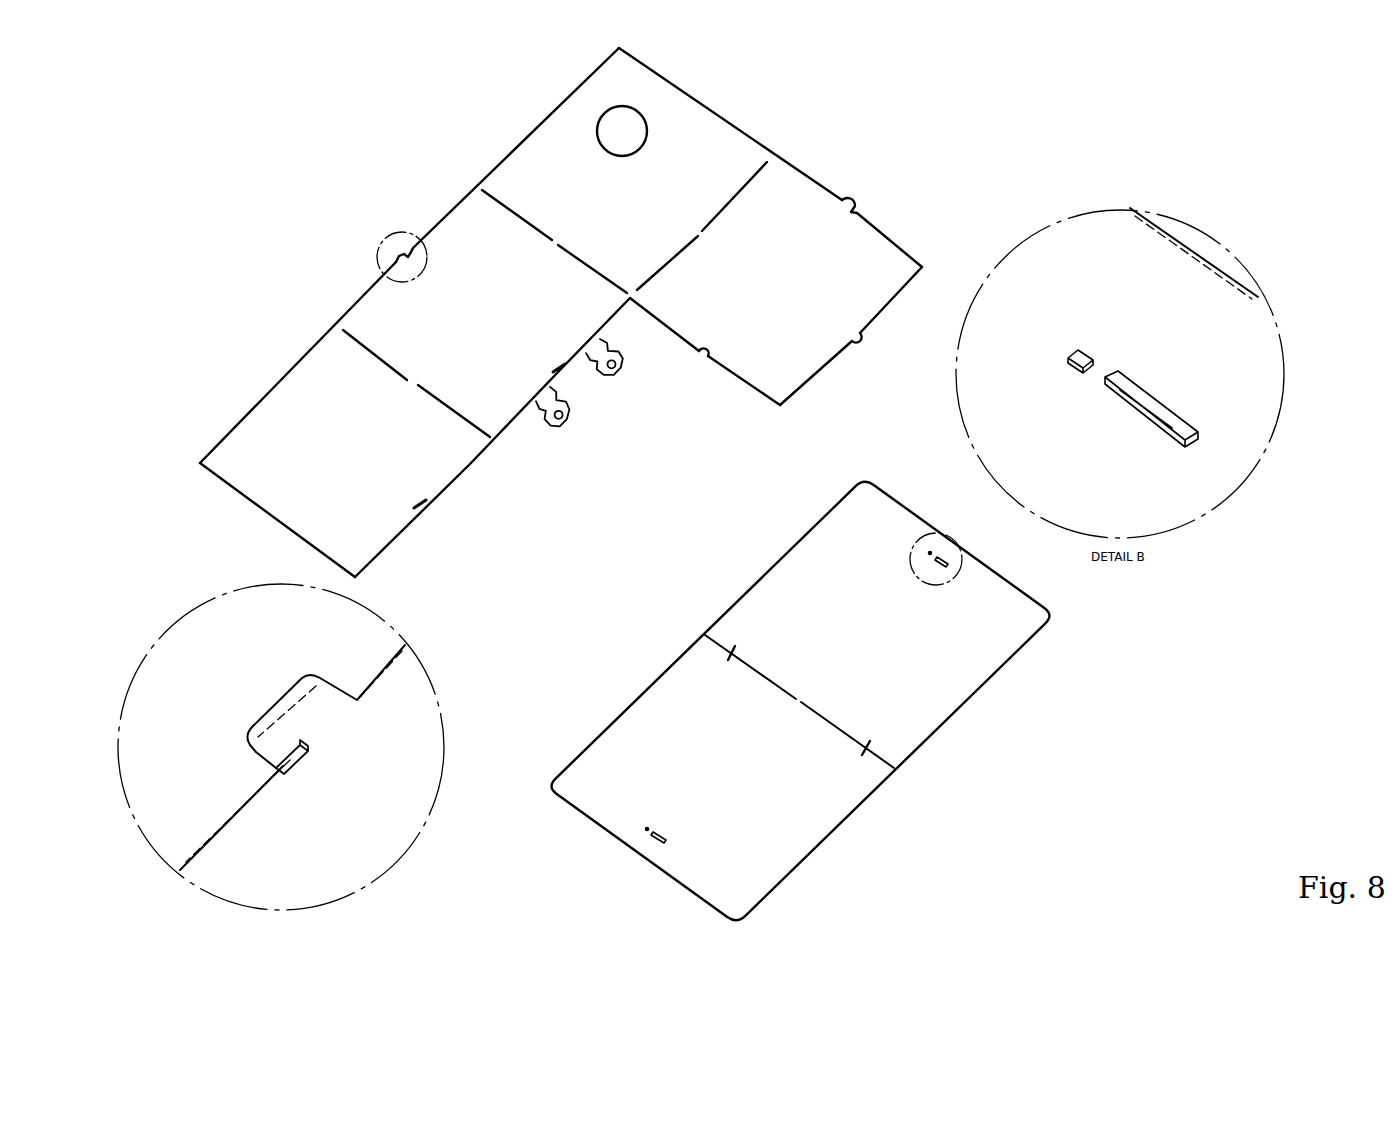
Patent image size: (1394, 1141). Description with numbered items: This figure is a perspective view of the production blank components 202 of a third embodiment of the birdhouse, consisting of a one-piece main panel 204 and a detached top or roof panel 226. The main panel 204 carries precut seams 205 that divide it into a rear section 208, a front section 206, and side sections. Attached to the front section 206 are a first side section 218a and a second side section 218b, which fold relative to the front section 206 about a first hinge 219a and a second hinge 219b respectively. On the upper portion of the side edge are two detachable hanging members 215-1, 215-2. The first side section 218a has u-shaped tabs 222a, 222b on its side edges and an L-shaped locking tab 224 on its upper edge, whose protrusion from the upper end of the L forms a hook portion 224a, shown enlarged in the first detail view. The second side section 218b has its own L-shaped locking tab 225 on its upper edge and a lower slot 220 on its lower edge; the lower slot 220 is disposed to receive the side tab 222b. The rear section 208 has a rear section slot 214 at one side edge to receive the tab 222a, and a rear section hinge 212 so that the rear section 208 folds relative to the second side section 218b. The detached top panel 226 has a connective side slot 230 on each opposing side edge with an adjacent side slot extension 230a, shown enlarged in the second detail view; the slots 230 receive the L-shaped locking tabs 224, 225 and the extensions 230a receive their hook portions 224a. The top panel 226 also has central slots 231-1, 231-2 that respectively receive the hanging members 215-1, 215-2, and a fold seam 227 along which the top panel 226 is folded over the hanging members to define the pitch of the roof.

The production blank components 202 is at (154, 954).
The main panel 204 is at (797, 129).
The precut seams 205 is at (508, 200).
The front section 206 is at (722, 117).
The rear section 208 is at (187, 463).
The rear section hinge 212 is at (403, 385).
The rear section slot 214 is at (427, 510).
The hanging member 215-1 is at (622, 378).
The hanging member 215-2 is at (560, 430).
The first side section 218a is at (903, 245).
The second side section 218b is at (355, 296).
The first hinge 219a is at (698, 223).
The second hinge 219b is at (552, 235).
The lower slot 220 is at (565, 372).
The u-shaped tab 222a is at (865, 344).
The u-shaped tab 222b is at (705, 363).
The L-shaped locking tab 224 is at (858, 198).
The hook portion 224a is at (260, 770).
The L-shaped locking tab 225 is at (396, 244).
The top panel 226 is at (759, 576).
The fold seam 227 is at (816, 713).
The connective side slot 230 is at (649, 844).
The side slot extension 230a is at (1088, 343).
The central slot 231-1 is at (884, 746).
The central slot 231-2 is at (721, 651).